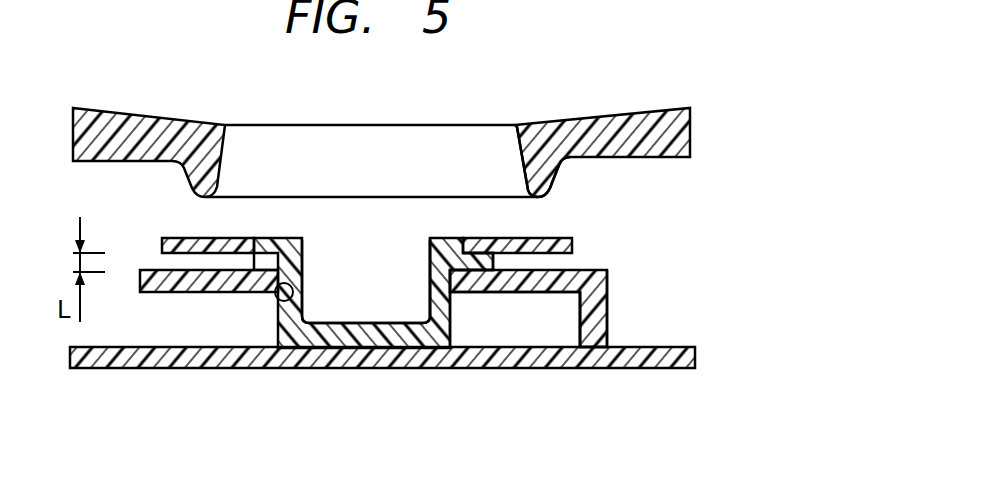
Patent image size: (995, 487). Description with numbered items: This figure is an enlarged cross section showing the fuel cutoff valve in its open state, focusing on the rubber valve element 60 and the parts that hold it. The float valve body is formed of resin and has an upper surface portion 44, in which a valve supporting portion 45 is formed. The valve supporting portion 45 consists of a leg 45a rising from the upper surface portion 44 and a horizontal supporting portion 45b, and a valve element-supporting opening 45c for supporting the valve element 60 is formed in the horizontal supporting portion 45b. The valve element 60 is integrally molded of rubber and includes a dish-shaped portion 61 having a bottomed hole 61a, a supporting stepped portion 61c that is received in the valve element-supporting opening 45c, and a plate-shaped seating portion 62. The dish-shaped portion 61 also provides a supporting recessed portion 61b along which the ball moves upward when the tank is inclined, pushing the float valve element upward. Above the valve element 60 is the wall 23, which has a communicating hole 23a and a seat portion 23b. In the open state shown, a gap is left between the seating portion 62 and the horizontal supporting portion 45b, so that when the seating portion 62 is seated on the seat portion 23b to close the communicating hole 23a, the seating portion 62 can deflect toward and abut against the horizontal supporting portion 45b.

The partition wall 23 is at (599, 128).
The communicating hole 23a is at (452, 134).
The seat portion 23b is at (546, 191).
The valve element 60 is at (172, 236).
The seating portion 62 is at (575, 245).
The dish-shaped portion 61 is at (437, 308).
The bottomed hole 61a is at (332, 322).
The supporting recessed portion 61b is at (447, 245).
The supporting stepped portion 61c is at (483, 268).
The valve supporting portion 45 is at (597, 283).
The leg 45a is at (595, 330).
The horizontal supporting portion 45b is at (503, 285).
The valve element-supporting opening 45c is at (277, 297).
The upper surface portion 44 is at (680, 360).